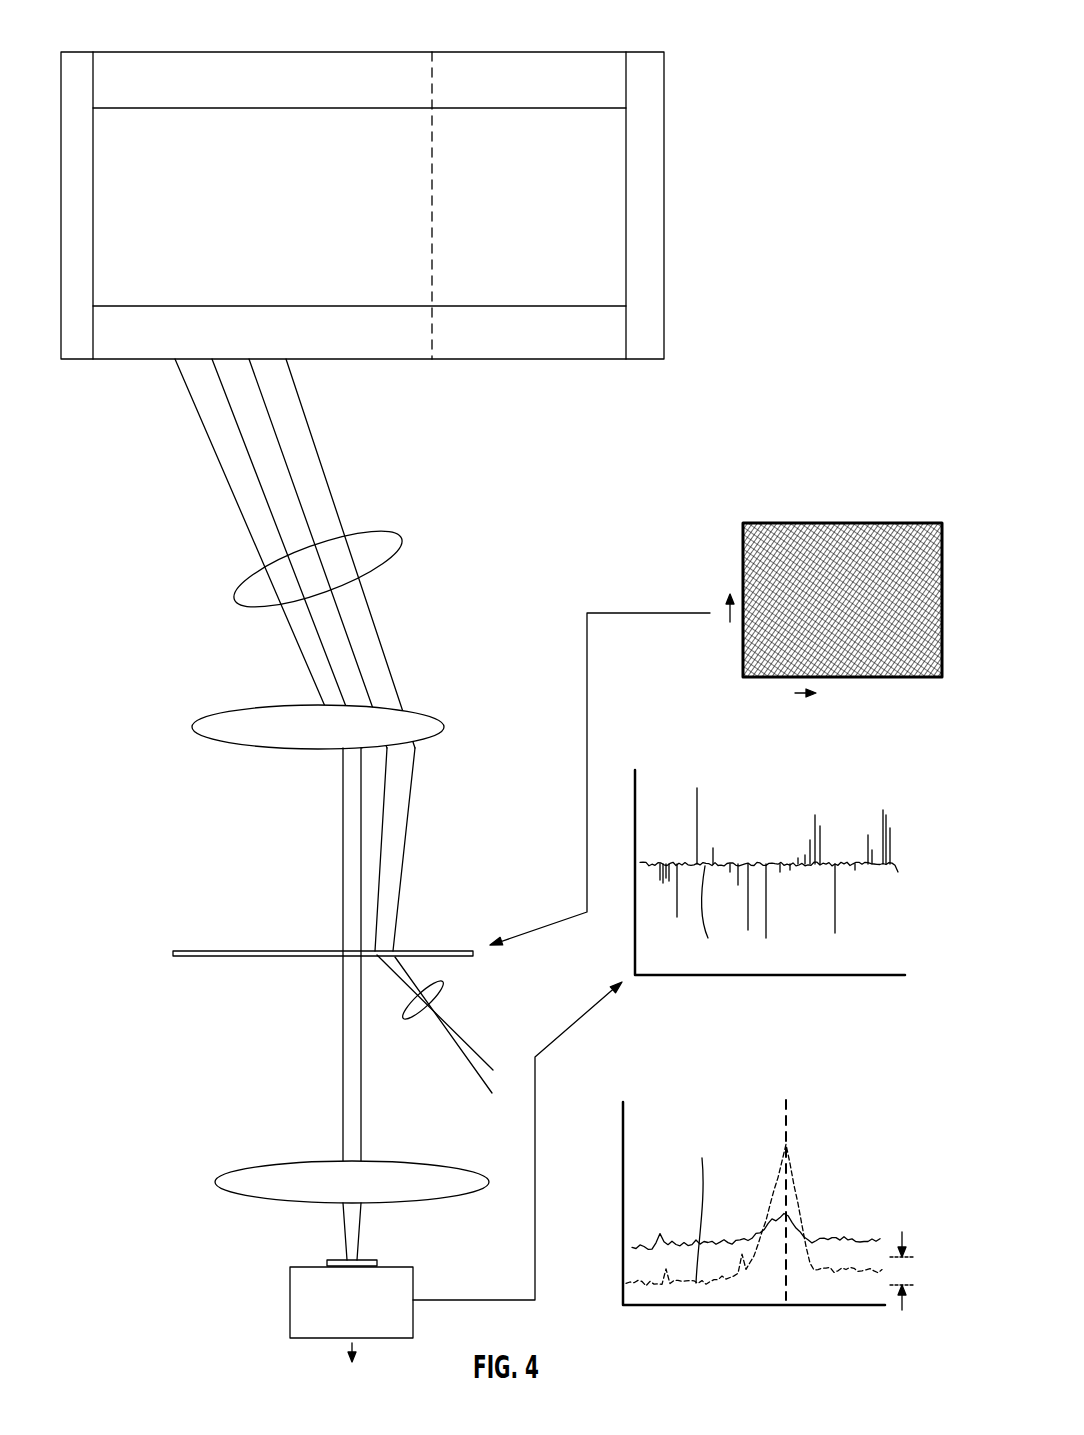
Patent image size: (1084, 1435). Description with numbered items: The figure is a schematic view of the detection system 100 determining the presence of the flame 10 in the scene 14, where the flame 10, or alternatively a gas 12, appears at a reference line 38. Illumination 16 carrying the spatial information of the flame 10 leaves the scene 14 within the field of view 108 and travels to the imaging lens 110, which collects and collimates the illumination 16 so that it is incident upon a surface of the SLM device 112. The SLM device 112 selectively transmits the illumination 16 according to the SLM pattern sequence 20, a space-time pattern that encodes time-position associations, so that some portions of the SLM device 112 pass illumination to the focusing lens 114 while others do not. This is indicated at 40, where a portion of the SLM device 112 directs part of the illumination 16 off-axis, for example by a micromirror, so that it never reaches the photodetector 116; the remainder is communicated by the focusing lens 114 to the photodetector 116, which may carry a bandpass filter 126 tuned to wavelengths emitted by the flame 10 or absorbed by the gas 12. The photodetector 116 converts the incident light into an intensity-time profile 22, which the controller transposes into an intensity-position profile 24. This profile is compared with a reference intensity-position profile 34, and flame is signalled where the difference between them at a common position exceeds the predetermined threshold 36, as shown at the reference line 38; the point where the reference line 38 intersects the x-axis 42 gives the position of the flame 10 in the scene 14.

The flame 10 is at (447, 205).
The gas 12 is at (432, 152).
The scene 14 is at (648, 267).
The illumination 16 is at (247, 578).
The SLM pattern sequence 20 is at (785, 523).
The intensity-time profile 22 is at (866, 951).
The intensity-position profile 24 is at (797, 1155).
The reference intensity-position profile 34 is at (845, 1242).
The predetermined threshold 36 is at (910, 1270).
The reference line 38 is at (432, 287).
The off-axis direction of illumination portion 40 is at (407, 1018).
The x-axis 42 is at (645, 1306).
The detection system 100 is at (77, 1254).
The field of view 108 is at (478, 397).
The imaging lens 110 is at (437, 717).
The SLM device 112 is at (232, 956).
The focusing lens 114 is at (232, 1172).
The photodetector 116 is at (290, 1296).
The filter 126 is at (370, 1260).